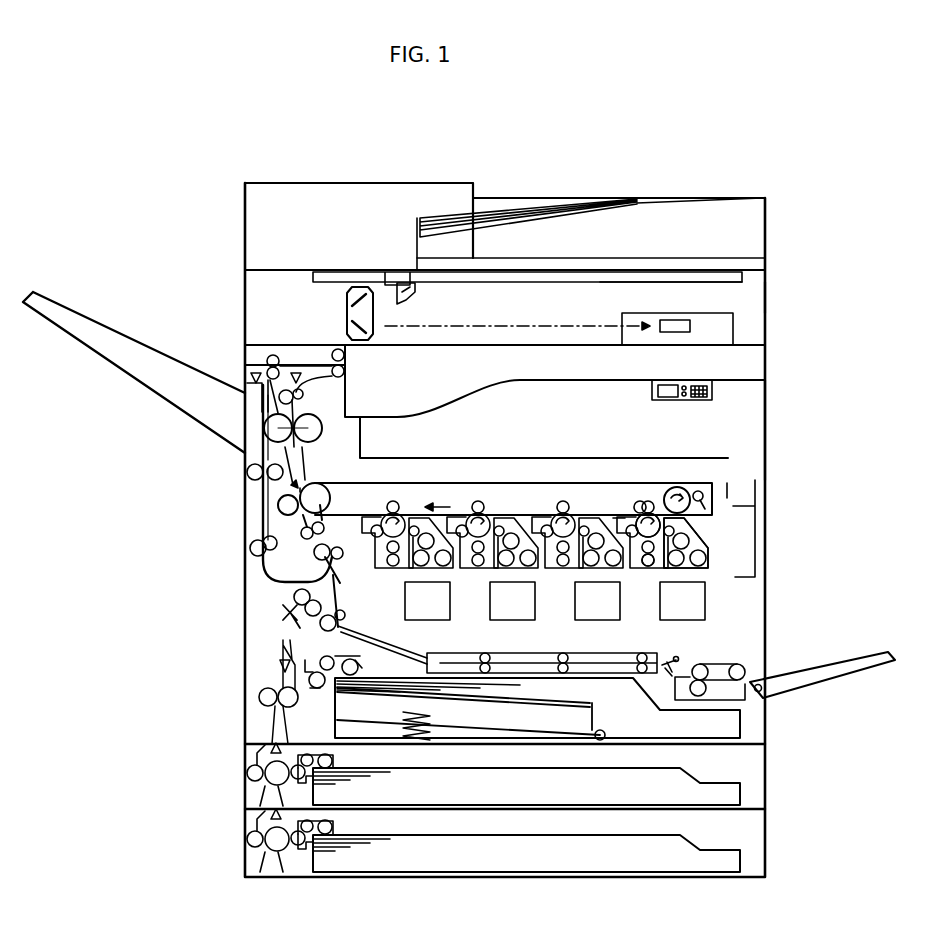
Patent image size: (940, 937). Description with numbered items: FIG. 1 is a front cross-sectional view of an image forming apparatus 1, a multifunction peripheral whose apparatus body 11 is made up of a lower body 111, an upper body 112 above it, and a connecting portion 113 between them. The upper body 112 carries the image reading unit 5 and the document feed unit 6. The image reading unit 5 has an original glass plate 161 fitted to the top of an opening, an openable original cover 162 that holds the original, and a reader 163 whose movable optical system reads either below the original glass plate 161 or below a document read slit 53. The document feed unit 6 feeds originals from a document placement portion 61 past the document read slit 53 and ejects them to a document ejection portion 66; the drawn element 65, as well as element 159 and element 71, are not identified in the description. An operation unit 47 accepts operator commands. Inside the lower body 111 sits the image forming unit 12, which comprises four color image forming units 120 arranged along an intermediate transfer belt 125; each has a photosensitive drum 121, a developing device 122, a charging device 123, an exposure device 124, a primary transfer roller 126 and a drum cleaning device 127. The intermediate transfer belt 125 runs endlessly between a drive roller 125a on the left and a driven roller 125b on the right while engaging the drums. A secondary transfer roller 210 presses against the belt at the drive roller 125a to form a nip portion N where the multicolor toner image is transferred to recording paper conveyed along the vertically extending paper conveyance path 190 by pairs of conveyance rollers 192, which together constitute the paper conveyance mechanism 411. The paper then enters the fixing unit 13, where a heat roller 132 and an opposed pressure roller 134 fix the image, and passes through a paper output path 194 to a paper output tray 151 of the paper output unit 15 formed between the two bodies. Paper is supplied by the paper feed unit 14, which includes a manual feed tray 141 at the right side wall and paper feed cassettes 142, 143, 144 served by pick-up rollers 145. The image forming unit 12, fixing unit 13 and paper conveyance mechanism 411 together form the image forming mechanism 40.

The image forming apparatus 1 is at (838, 251).
The image reading unit 5 is at (226, 302).
The document feed unit 6 is at (619, 185).
The document placement portion 61 is at (673, 200).
The document discharge section 65 is at (312, 233).
The document ejection portion 66 is at (683, 258).
The document read slit 53 is at (400, 281).
The reader 163 is at (347, 314).
The original cover 162 is at (568, 268).
The original glass plate 161 is at (638, 277).
The apparatus body 11 is at (873, 292).
The upper body 112 is at (767, 296).
The connecting portion 113 is at (354, 357).
The lower body 111 is at (769, 402).
The paper output unit 15 is at (710, 373).
The paper output tray 151 is at (385, 415).
The operation unit 47 is at (720, 393).
The image forming mechanism 40 is at (755, 470).
The image forming unit 12 is at (527, 474).
The image forming unit 120 is at (546, 485).
The photosensitive drum 121 is at (668, 520).
The developing device 122 is at (695, 540).
The charging device 123 is at (652, 549).
The exposure device 124 is at (587, 614).
The intermediate transfer belt 125 is at (658, 482).
The drive roller 125a is at (318, 483).
The driven roller 125b is at (683, 490).
The primary transfer roller 126 is at (639, 503).
The drum cleaning device 127 is at (616, 520).
The paper conveyance path 190 is at (276, 507).
The nip portion N is at (285, 496).
The secondary transfer roller 210 is at (301, 556).
The paper conveyance mechanism 411 is at (318, 561).
The pairs of conveyance rollers 192 is at (330, 601).
The fixing unit 13 is at (222, 447).
The pressure roller 134 is at (262, 422).
The heat roller 132 is at (264, 445).
The discharge rollers 159 is at (332, 361).
The paper output path 194 is at (268, 356).
The discharge tray 71 is at (110, 367).
The pick-up rollers 145 is at (318, 822).
The paper feed unit 14 is at (885, 767).
The manual feed tray 141 is at (848, 670).
The paper feed cassette 142 is at (740, 727).
The paper feed cassette 143 is at (740, 790).
The paper feed cassette 144 is at (740, 853).